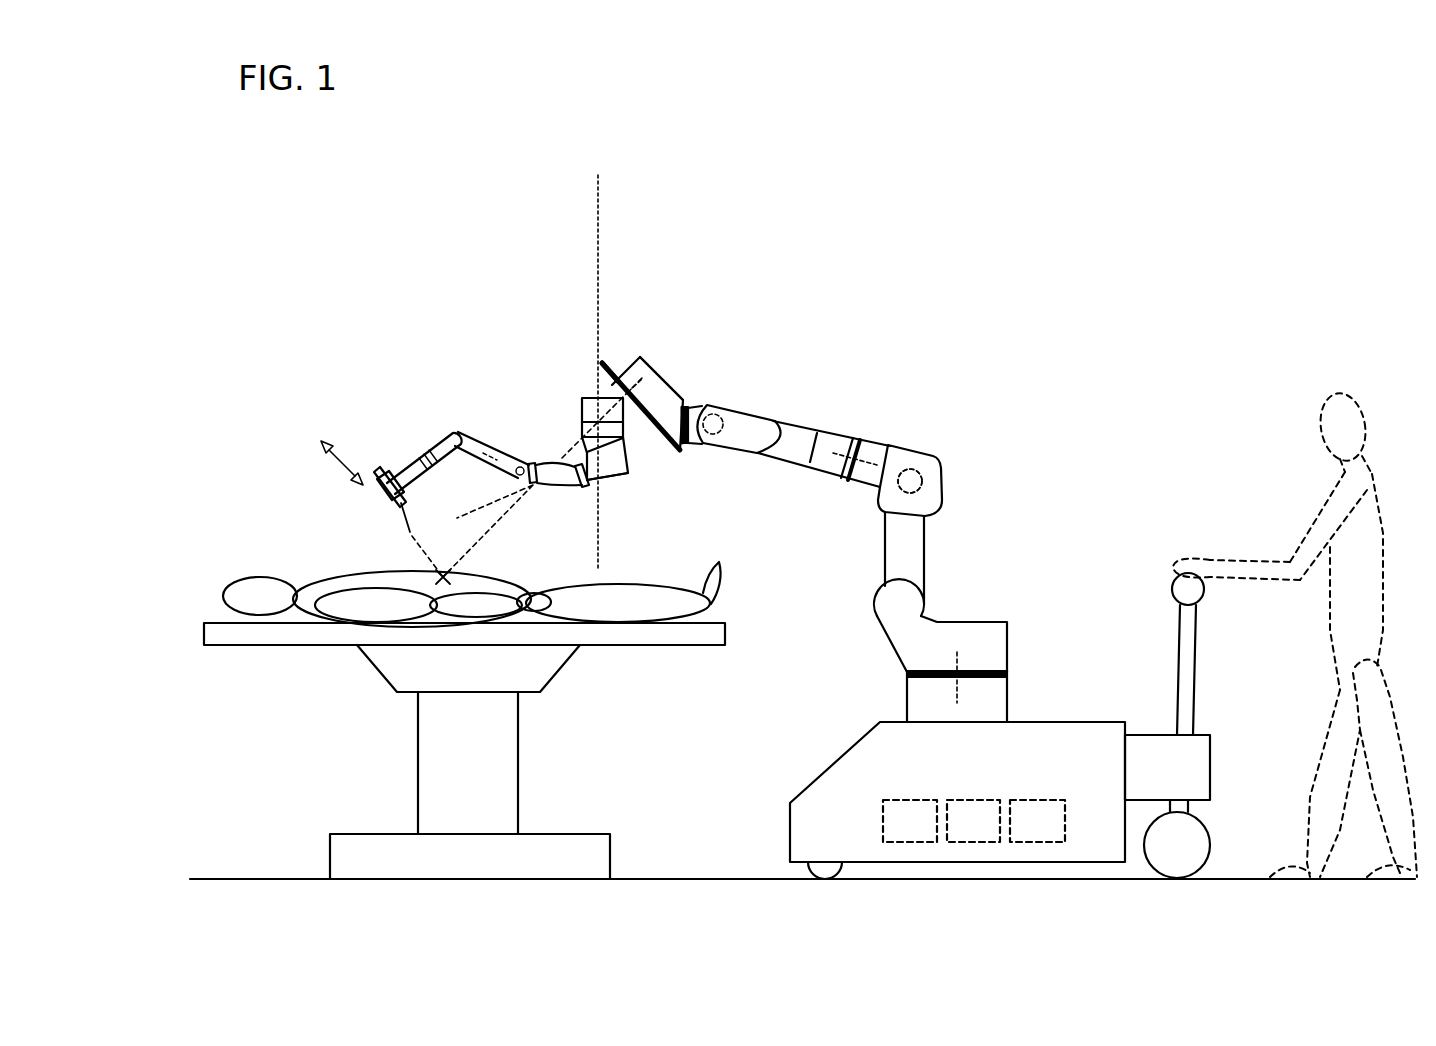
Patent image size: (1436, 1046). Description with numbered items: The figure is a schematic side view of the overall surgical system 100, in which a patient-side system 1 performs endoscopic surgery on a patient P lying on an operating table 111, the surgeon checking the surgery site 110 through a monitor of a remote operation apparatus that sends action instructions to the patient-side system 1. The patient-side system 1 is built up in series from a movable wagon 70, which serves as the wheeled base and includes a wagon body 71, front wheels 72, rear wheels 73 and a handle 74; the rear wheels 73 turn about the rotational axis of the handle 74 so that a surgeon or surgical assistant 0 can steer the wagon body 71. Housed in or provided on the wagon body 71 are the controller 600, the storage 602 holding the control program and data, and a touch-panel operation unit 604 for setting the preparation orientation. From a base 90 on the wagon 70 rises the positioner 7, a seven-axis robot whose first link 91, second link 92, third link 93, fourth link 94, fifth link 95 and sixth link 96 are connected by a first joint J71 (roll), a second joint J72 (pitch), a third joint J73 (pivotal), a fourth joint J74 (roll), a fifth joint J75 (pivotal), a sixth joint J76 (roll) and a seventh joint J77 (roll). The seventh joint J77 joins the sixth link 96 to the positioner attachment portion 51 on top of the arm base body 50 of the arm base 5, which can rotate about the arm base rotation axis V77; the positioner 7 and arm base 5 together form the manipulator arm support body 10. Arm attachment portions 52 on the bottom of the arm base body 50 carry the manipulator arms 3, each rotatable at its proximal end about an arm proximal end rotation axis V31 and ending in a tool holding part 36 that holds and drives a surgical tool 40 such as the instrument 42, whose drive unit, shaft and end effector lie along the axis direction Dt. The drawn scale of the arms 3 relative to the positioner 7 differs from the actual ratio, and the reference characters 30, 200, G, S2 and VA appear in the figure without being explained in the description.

The patient-side system 1 is at (545, 240).
The manipulator arm 3 is at (420, 428).
The arm base 5 is at (556, 362).
The positioner 7 is at (909, 382).
The manipulator arm support body 10 is at (674, 282).
The arm 30 is at (464, 404).
The tool holding part 36 is at (372, 502).
The surgical tool 40 is at (354, 522).
The instrument 42 is at (402, 528).
The arm base body 50 is at (581, 422).
The positioner attachment portion 51 is at (632, 410).
The arm attachment portion 52 is at (616, 473).
The wagon 70 is at (956, 755).
The wagon body 71 is at (800, 830).
The front wheels 72 is at (826, 880).
The rear wheels 73 is at (1181, 880).
The handle 74 is at (1172, 590).
The base 90 is at (992, 702).
The first link 91 is at (896, 653).
The second link 92 is at (885, 562).
The third link 93 is at (914, 452).
The fourth link 94 is at (795, 436).
The fifth link 95 is at (698, 435).
The sixth link 96 is at (662, 380).
The surgical system 100 is at (1097, 232).
The surgery site 110 is at (442, 572).
The operating table 111 is at (608, 646).
The connection portion 200 is at (606, 474).
The controller 600 is at (913, 846).
The storage 602 is at (976, 846).
The operation unit 604 is at (1038, 846).
The surgical assistant 0 is at (1340, 392).
The patient P is at (223, 597).
The ground G is at (263, 875).
The axis S2 is at (598, 224).
The arm base rotation axis V77 is at (560, 458).
The arm proximal end rotation axis V31 is at (505, 528).
The viewing direction VA is at (268, 420).
The axis direction Dt is at (332, 464).
The first joint J71 is at (1020, 677).
The second joint J72 is at (938, 606).
The third joint J73 is at (945, 491).
The fourth joint J74 is at (864, 428).
The fifth joint J75 is at (722, 395).
The sixth joint J76 is at (690, 392).
The seventh joint J77 is at (605, 362).